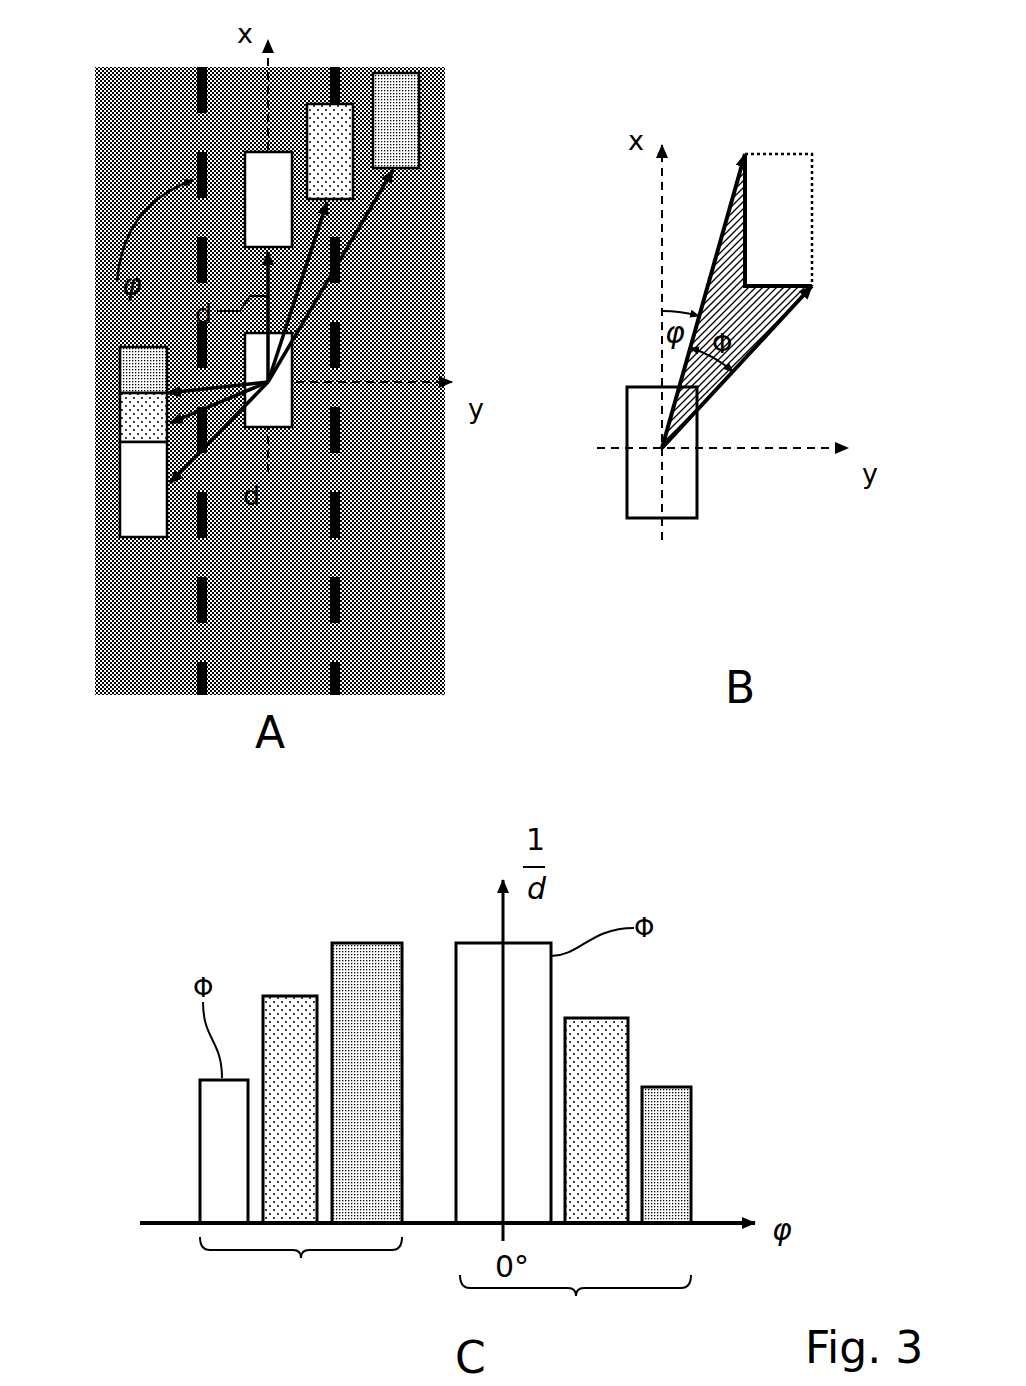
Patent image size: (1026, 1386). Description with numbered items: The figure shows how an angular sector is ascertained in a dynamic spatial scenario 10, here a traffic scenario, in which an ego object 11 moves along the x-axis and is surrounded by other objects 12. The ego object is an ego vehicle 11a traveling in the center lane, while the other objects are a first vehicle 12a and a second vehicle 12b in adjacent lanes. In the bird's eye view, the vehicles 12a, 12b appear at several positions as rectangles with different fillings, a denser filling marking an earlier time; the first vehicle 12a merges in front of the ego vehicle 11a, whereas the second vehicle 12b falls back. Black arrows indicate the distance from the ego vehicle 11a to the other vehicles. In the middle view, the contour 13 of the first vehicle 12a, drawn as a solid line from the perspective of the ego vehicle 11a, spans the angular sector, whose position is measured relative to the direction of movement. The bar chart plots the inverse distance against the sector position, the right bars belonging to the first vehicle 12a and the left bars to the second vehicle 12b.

The dynamic spatial scenario 10 is at (112, 55).
The ego object 11 is at (292, 427).
The ego vehicle 11a is at (697, 518).
The other objects 12 is at (247, 381).
The first vehicle 12a is at (256, 152).
The second vehicle 12b is at (167, 537).
The contour 13 is at (745, 267).